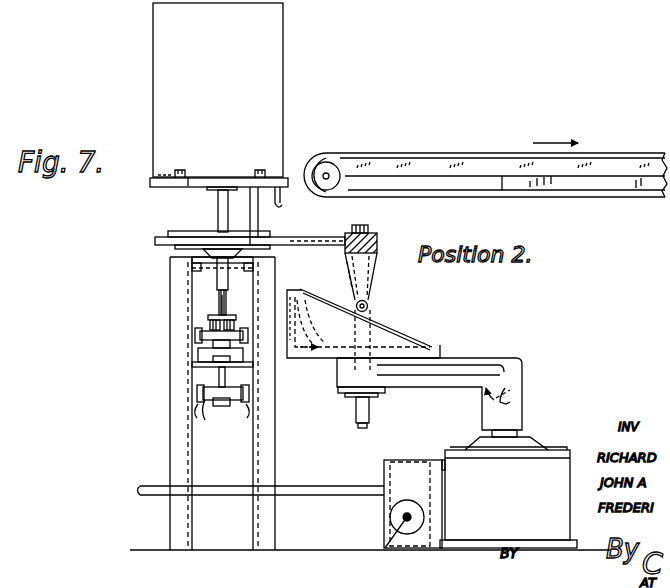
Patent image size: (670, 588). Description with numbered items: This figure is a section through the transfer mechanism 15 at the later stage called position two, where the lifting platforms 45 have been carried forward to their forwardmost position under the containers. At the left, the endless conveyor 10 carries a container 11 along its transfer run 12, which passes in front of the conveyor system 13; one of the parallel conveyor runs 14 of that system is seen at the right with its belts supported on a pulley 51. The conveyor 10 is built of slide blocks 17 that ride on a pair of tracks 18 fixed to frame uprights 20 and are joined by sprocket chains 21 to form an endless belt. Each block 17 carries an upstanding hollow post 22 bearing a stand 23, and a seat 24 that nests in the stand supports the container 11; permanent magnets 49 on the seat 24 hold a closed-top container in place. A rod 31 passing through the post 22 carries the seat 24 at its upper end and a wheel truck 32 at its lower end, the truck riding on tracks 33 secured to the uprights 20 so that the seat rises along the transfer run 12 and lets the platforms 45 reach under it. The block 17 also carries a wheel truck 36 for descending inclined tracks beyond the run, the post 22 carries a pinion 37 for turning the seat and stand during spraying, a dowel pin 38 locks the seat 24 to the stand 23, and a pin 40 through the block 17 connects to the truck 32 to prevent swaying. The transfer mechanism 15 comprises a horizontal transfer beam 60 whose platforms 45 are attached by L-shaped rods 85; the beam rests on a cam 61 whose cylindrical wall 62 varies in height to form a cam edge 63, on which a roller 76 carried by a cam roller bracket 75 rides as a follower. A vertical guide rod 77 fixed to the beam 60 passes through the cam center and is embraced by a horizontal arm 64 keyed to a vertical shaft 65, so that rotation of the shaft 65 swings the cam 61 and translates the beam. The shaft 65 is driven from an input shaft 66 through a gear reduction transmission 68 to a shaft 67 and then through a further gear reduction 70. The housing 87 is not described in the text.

The endless conveyor 10 is at (187, 381).
The container 11 is at (277, 97).
The transfer run 12 is at (190, 367).
The conveyor system 13 is at (612, 143).
The conveyor run 14 is at (335, 153).
The transfer mechanism 15 is at (376, 280).
The block 17 is at (200, 354).
The track 18 is at (192, 391).
The frame upright 20 is at (276, 462).
The sprocket chain 21 is at (213, 338).
The post 22 is at (218, 272).
The stand 23 is at (165, 240).
The seat 24 is at (170, 185).
The rod 31 is at (218, 213).
The wheel truck 32 is at (203, 401).
The track 33 is at (197, 412).
The wheel truck 36 is at (233, 333).
The pinion 37 is at (212, 318).
The dowel pin 38 is at (282, 204).
The pin 40 is at (222, 295).
The lifting platform 45 is at (200, 191).
The permanent magnet 49 is at (178, 177).
The pulley 51 is at (318, 163).
The transfer beam 60 is at (380, 238).
The cam 61 is at (432, 353).
The cylindrical wall 62 is at (323, 378).
The cam edge 63 is at (326, 352).
The horizontal arm 64 is at (457, 371).
The vertical shaft 65 is at (518, 431).
The input shaft 66 is at (142, 492).
The shaft 67 is at (386, 547).
The gear reduction transmission 68 is at (412, 468).
The gear reduction 70 is at (508, 497).
The cam roller bracket 75 is at (369, 303).
The roller 76 is at (390, 317).
The guide rod 77 is at (362, 428).
The L-shaped rod 85 is at (314, 216).
The housing 87 is at (361, 7).